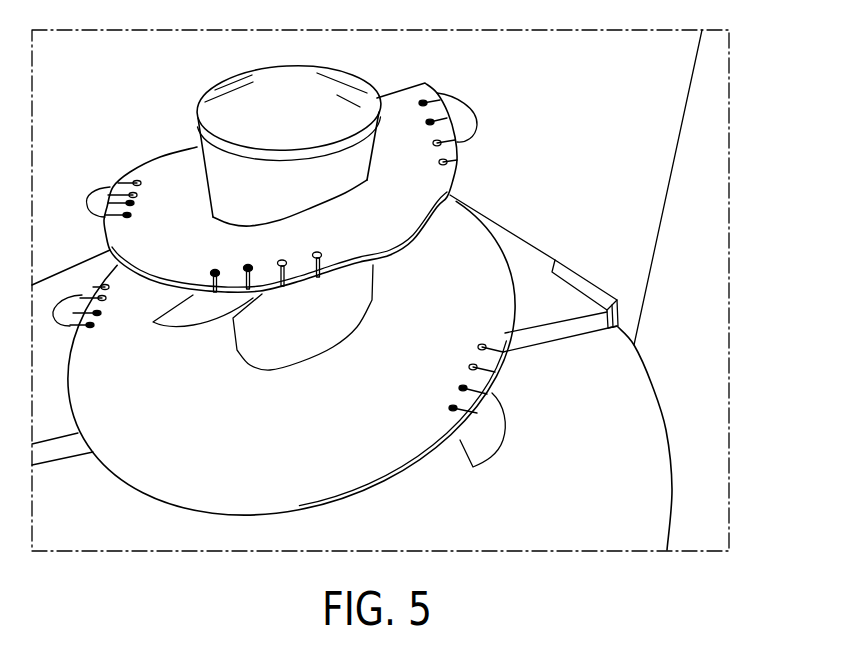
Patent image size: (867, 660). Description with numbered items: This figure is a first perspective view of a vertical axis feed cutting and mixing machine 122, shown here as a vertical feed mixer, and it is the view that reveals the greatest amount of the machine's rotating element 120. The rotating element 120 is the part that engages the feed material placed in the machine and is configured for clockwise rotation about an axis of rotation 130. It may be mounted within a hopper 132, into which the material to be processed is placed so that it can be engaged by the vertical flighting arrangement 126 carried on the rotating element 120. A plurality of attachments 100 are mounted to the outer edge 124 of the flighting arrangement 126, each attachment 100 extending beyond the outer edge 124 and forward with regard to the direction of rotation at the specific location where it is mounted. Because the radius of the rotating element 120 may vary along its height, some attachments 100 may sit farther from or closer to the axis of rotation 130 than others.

The attachment 100 is at (491, 424).
The rotating element 120 is at (472, 245).
The feed cutting and mixing machine 122 is at (712, 192).
The outer edge 124 is at (490, 382).
The vertical flighting arrangement 126 is at (488, 318).
The axis of rotation 130 is at (289, 131).
The hopper 132 is at (606, 96).